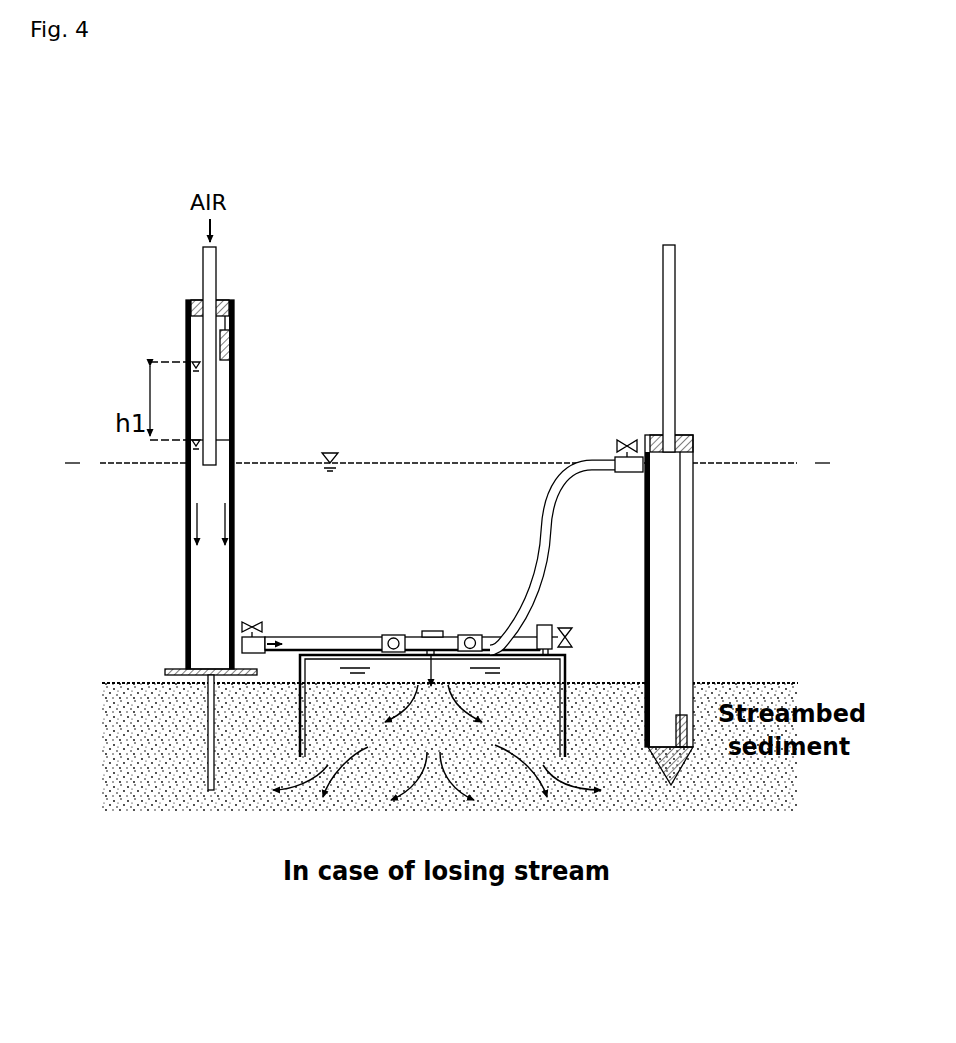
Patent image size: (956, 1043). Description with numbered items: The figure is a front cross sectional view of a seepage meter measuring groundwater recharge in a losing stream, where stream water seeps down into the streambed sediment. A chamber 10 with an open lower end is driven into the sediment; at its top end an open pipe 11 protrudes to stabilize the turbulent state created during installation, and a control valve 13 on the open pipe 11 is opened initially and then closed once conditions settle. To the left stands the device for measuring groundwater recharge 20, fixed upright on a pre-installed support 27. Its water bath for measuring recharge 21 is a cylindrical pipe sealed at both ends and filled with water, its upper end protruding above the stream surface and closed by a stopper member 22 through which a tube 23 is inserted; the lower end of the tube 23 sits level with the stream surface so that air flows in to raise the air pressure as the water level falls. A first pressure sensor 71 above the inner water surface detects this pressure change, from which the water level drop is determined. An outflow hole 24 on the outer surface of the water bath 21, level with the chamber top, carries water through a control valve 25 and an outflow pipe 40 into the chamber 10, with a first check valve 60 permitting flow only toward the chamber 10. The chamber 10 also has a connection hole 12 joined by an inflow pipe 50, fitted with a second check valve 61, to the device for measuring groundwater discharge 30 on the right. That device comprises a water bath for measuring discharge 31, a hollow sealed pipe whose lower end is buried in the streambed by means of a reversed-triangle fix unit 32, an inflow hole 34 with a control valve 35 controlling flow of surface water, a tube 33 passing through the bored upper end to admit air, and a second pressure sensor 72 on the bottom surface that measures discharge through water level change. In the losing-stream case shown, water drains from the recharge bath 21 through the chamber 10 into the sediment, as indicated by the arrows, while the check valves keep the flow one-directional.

The chamber 10 is at (302, 733).
The open pipe 11 is at (572, 645).
The connection hole 12 is at (434, 631).
The control valve 13 is at (552, 632).
The device for measuring groundwater recharge 20 is at (180, 352).
The water bath for measuring recharge 21 is at (234, 322).
The stopper member 22 is at (197, 300).
The tube 23 is at (210, 277).
The outflow hole 24 is at (241, 622).
The control valve 25 is at (262, 622).
The support 27 is at (165, 670).
The device for measuring groundwater discharge 30 is at (699, 586).
The water bath for measuring discharge 31 is at (700, 640).
The fix unit 32 is at (676, 772).
The tube 33 is at (670, 275).
The inflow hole 34 is at (641, 462).
The control valve 35 is at (620, 446).
The outflow pipe 40 is at (345, 636).
The inflow pipe 50 is at (548, 545).
The first check valve 60 is at (392, 634).
The second check valve 61 is at (470, 634).
The first pressure sensor 71 is at (232, 346).
The second pressure sensor 72 is at (690, 738).